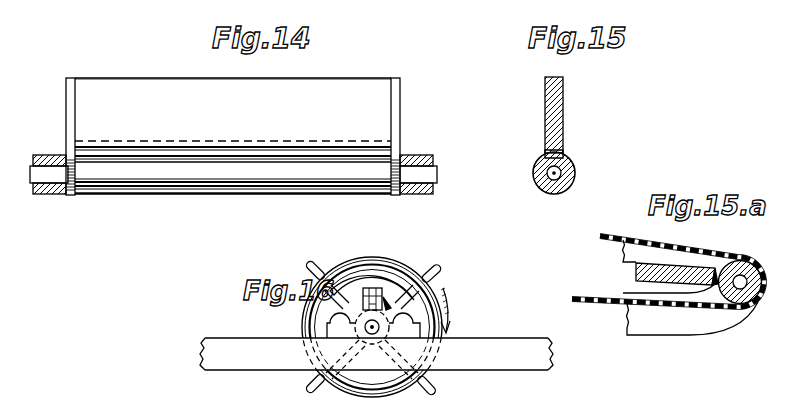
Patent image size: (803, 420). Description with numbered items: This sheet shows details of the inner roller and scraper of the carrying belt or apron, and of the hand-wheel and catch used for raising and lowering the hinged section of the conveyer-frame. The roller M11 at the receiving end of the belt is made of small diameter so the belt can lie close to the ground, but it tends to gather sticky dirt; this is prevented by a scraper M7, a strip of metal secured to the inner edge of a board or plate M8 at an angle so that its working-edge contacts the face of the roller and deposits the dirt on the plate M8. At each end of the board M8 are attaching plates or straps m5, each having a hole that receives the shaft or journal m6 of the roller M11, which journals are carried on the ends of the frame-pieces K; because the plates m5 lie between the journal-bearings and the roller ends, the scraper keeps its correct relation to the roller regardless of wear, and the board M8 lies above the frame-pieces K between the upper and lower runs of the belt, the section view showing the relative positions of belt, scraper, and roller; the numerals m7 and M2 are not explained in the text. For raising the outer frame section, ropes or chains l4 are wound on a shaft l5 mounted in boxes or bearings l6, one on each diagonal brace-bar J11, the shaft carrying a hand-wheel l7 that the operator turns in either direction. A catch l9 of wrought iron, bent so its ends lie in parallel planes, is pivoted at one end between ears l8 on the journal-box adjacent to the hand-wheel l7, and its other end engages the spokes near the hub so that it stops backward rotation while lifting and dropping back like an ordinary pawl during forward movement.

In FIG. 14, the attaching-plates m5 is at (225, 136).
In FIG. 14, the bearing block m7 is at (233, 152).
In FIG. 14, the shaft or journal m6 is at (233, 180).
In FIG. 14, the board or plate M8 is at (233, 95).
In FIG. 15, the board or plate M8 is at (528, 112).
In FIG. 15a, the board or plate M8 is at (670, 266).
In FIG. 14, the scraper M7 is at (233, 135).
In FIG. 15, the scraper M7 is at (545, 156).
In FIG. 15a, the scraper M7 is at (719, 268).
In FIG. 14, the roller M2 is at (233, 170).
In FIG. 15, the roller M2 is at (575, 181).
In FIG. 15a, the roller M11 is at (769, 262).
In FIG. 15a, the frame-pieces K is at (693, 331).
In FIG. 16, the hand-wheel l7 is at (376, 313).
In FIG. 16, the ears l8 is at (372, 288).
In FIG. 16, the catch l9 is at (374, 294).
In FIG. 16, the ropes or chains l4 is at (393, 304).
In FIG. 16, the boxes or bearings l6 is at (372, 327).
In FIG. 16, the shaft l5 is at (373, 339).
In FIG. 16, the diagonal brace-bar J11 is at (376, 354).